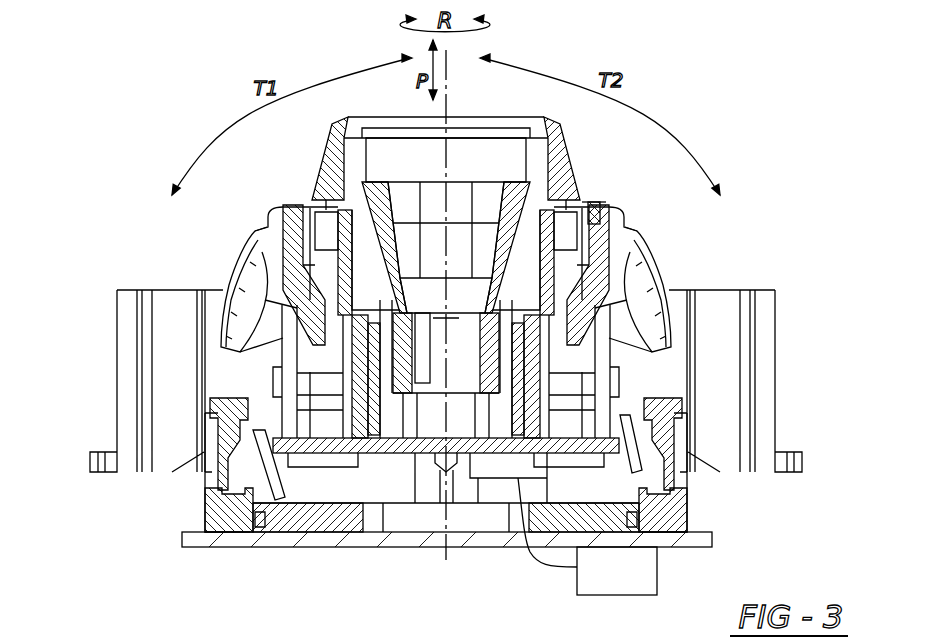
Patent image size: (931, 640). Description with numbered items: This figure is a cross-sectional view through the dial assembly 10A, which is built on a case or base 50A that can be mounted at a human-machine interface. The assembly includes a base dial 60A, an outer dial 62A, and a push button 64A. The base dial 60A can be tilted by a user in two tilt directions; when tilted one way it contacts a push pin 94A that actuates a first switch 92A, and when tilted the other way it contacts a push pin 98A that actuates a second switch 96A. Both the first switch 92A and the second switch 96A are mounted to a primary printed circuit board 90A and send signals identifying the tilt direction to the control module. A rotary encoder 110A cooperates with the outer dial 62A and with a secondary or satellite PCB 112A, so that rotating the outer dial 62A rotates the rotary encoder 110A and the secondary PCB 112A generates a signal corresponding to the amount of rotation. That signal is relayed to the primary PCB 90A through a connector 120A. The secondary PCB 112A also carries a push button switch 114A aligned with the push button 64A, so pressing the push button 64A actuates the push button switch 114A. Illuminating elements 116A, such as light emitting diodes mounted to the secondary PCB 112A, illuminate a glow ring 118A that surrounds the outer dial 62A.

The dial assembly 10A is at (162, 112).
The case or base 50A is at (473, 520).
The base dial 60A is at (240, 267).
The outer dial 62A is at (326, 185).
The push button 64A is at (473, 162).
The primary printed circuit board 90A is at (285, 537).
The first switch 92A is at (228, 520).
The push pin 94A is at (229, 441).
The second switch 96A is at (673, 513).
The push pin 98A is at (667, 437).
The rotary encoder 110A is at (372, 420).
The secondary or satellite PCB 112A is at (374, 446).
The push button switch 114A is at (456, 388).
The illuminating elements 116A is at (441, 402).
The glow ring 118A is at (598, 220).
The connector 120A is at (555, 573).